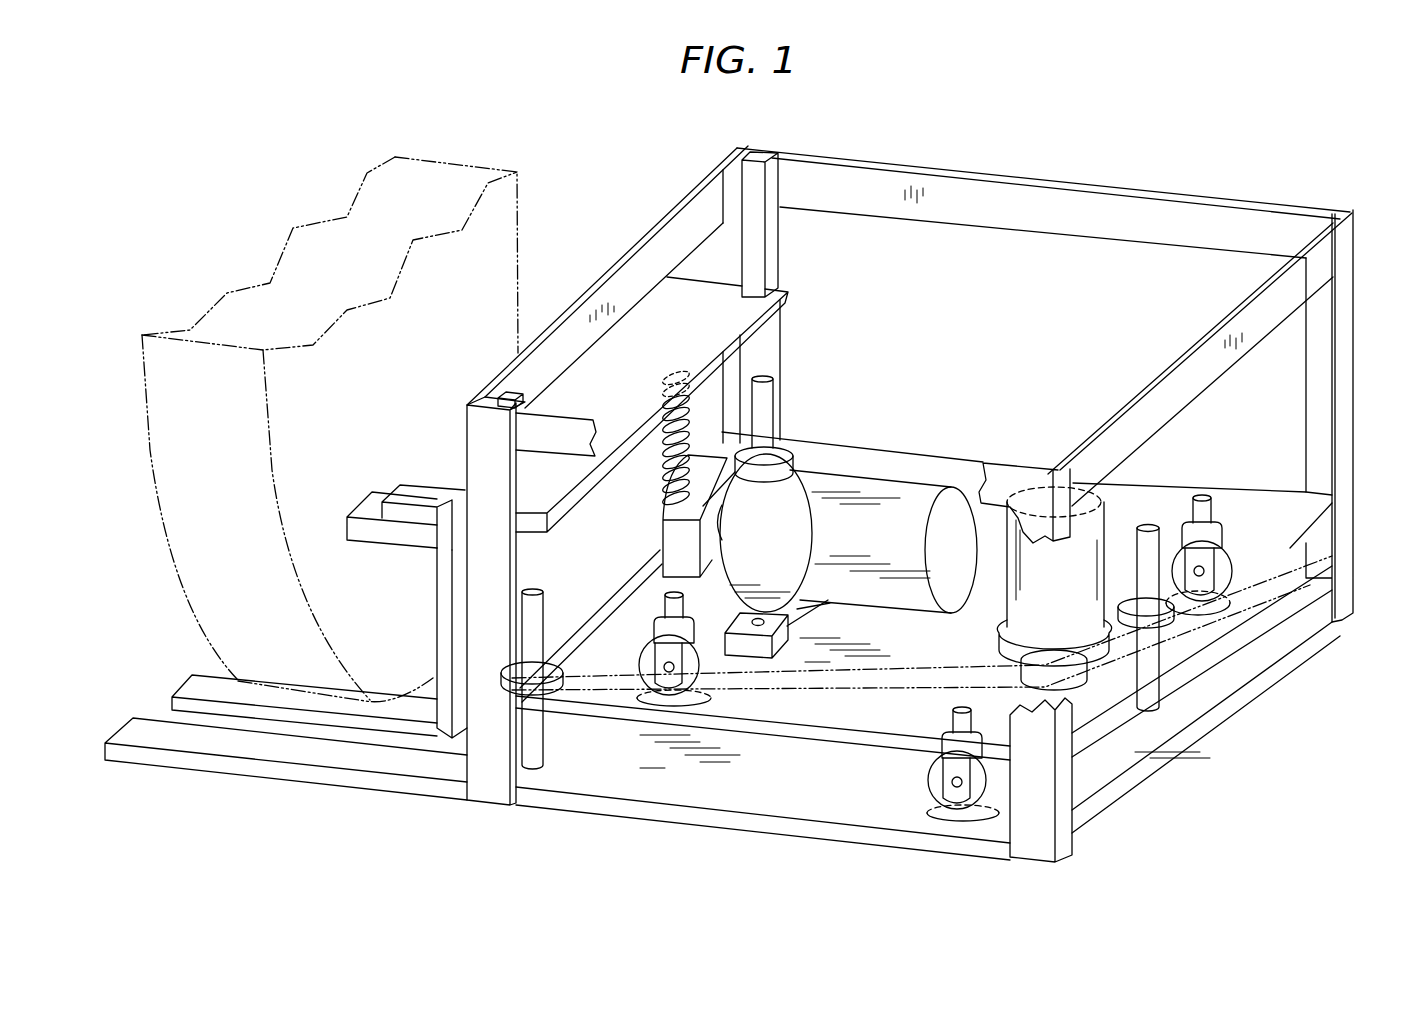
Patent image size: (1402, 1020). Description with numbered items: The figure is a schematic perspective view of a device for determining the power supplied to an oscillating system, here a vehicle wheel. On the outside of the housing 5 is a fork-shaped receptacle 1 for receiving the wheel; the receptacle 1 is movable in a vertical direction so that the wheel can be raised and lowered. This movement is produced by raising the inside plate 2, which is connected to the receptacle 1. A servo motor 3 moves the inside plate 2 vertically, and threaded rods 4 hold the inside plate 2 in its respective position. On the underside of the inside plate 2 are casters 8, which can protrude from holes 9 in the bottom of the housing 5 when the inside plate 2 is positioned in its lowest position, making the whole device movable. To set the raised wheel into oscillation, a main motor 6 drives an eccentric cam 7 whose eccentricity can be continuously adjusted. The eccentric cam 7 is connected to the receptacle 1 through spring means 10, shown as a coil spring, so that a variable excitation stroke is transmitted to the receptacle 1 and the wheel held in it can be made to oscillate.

The receptacle 1 is at (421, 489).
The inside plate 2 is at (877, 715).
The servo motor 3 is at (1060, 568).
The threaded rods 4 is at (778, 400).
The housing 5 is at (998, 188).
The main motor 6 is at (845, 500).
The eccentric cam 7 is at (713, 505).
The casters 8 is at (653, 682).
The holes 9 is at (970, 823).
The spring means 10 is at (663, 380).